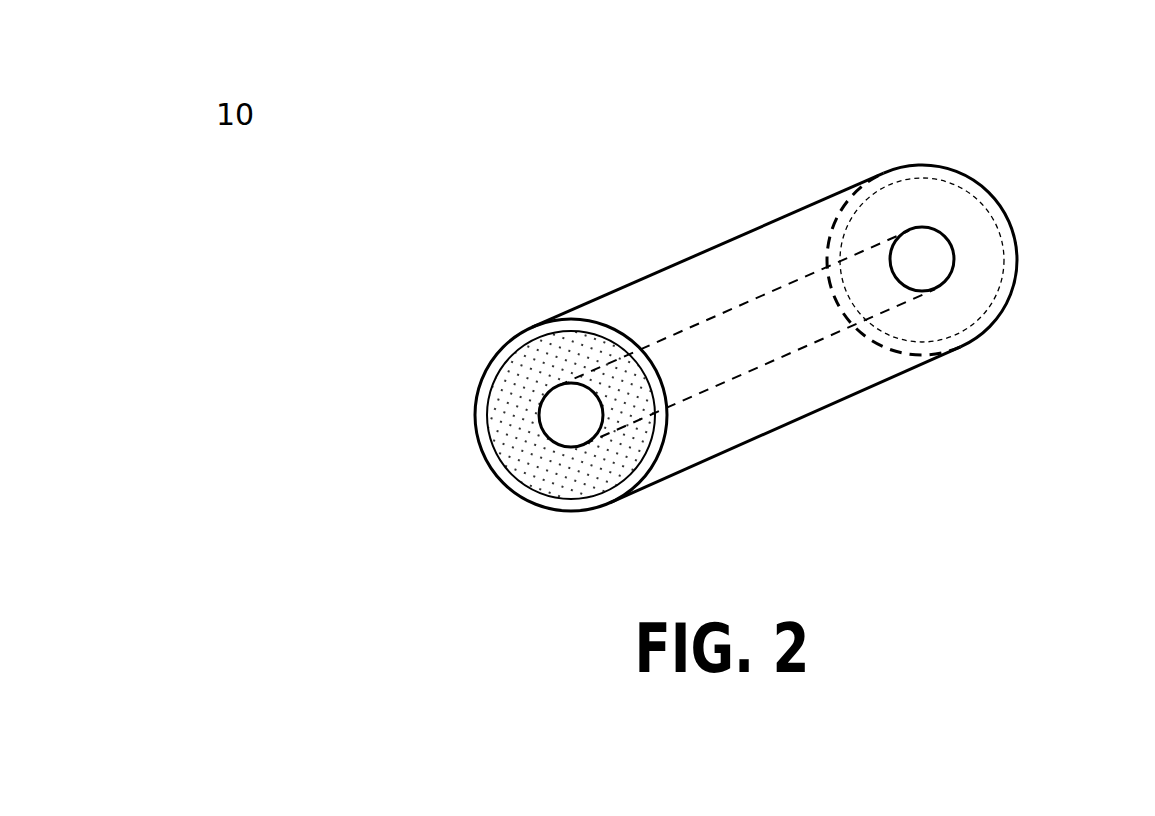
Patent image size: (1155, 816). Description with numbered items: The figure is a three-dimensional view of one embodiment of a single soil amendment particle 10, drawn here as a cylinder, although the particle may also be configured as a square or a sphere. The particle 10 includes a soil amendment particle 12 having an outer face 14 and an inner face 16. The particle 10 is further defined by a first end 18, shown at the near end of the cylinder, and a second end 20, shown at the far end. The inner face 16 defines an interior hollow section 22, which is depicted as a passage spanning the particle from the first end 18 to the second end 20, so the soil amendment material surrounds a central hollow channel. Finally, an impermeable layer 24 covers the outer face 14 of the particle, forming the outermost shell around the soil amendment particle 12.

The particle 10 is at (746, 338).
The soil amendment particle 12 is at (509, 392).
The outer face 14 is at (506, 499).
The inner face 16 is at (549, 376).
The first end 18 is at (564, 444).
The second end 20 is at (954, 227).
The interior hollow section 22 is at (743, 322).
The impermeable layer 24 is at (668, 422).